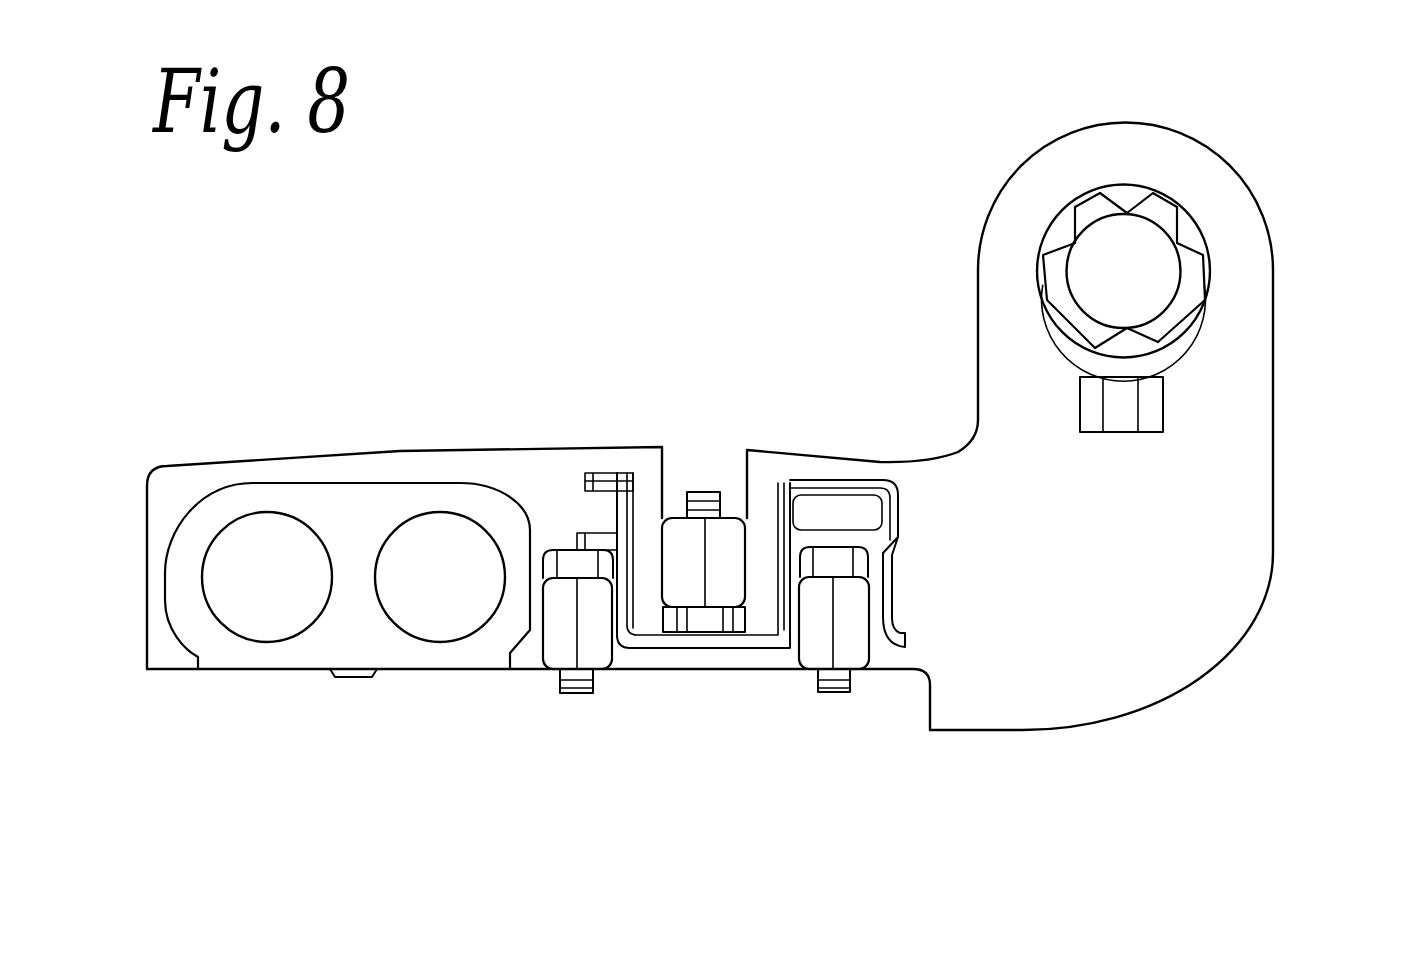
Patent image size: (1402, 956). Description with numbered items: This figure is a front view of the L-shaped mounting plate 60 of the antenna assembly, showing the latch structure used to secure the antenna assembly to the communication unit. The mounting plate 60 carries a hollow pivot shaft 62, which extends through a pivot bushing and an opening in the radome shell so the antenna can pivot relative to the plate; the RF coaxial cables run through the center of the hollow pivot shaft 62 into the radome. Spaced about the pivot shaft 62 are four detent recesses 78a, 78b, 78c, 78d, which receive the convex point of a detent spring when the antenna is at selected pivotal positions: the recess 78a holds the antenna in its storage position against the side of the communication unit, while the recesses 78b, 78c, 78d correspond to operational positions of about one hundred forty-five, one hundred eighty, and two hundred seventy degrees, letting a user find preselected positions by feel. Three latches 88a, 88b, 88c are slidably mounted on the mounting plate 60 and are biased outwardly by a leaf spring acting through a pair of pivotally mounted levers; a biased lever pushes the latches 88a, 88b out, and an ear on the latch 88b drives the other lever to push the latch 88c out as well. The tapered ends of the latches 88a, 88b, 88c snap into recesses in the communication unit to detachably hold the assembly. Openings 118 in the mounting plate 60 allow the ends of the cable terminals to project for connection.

The mounting plate 60 is at (1058, 582).
The hollow pivot shaft 62 is at (1187, 302).
The detent recess 78a is at (1124, 337).
The detent recess 78b is at (1181, 222).
The detent recess 78c is at (1112, 197).
The detent recess 78d is at (1057, 246).
The latch 88a is at (837, 695).
The latch 88b is at (703, 492).
The latch 88c is at (572, 695).
The opening 118 is at (252, 622).